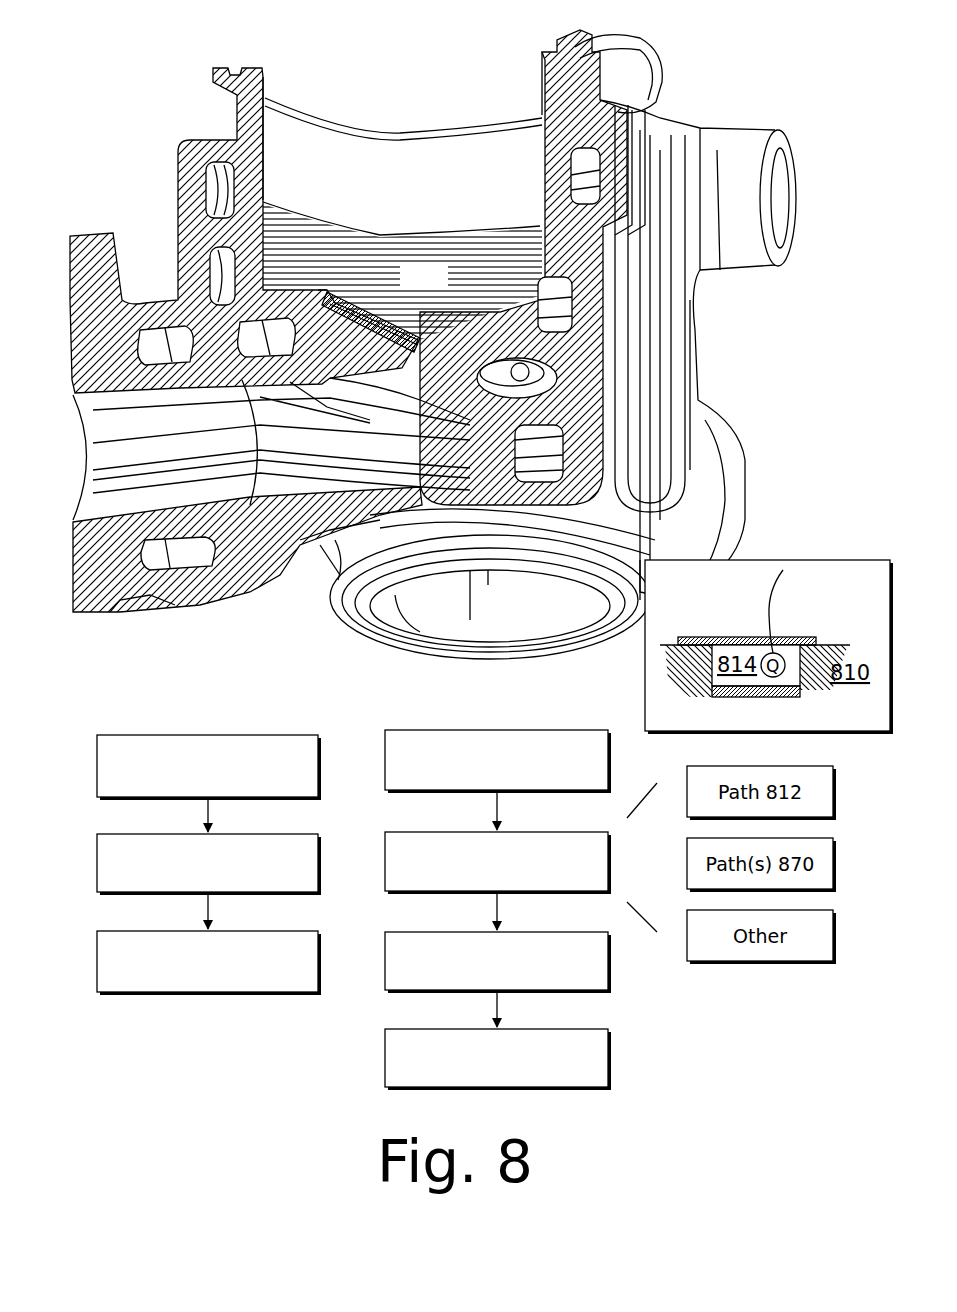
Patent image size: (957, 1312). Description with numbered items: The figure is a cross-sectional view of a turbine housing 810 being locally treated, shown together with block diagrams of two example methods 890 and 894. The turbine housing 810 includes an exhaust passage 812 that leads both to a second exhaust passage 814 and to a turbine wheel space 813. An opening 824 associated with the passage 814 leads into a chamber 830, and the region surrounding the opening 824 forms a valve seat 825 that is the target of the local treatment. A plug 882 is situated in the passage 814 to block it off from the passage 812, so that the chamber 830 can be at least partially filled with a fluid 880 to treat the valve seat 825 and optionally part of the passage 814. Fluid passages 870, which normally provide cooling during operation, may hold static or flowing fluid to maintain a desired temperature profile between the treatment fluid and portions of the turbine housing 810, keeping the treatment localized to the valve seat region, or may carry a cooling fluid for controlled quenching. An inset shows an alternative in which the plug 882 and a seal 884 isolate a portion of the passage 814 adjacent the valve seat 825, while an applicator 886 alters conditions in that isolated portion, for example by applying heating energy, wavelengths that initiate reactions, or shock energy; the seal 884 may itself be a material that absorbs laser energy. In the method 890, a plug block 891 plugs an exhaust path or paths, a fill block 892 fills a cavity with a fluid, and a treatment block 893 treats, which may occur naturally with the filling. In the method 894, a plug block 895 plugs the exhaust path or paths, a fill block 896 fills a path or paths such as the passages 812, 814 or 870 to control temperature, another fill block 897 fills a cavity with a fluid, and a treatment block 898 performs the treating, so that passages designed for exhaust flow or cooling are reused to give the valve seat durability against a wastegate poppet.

The turbine housing 810 is at (236, 143).
The exhaust passage 812 is at (271, 449).
The turbine wheel space 813 is at (428, 612).
The exhaust passage 814 is at (330, 400).
The opening 824 is at (343, 322).
The valve seat 825 is at (318, 290).
The chamber 830 is at (401, 194).
The fluid passages 870 is at (212, 188).
The fill material 880 is at (402, 272).
The plug 882 is at (322, 352).
The seal 884 is at (722, 637).
The applicator 886 is at (768, 608).
The method 890 is at (217, 697).
The plug block 891 is at (157, 735).
The fill block 892 is at (157, 834).
The treatment block 893 is at (157, 931).
The method 894 is at (495, 697).
The plug block 895 is at (445, 730).
The fill block 896 is at (445, 832).
The fill block 897 is at (445, 932).
The treatment block 898 is at (445, 1029).